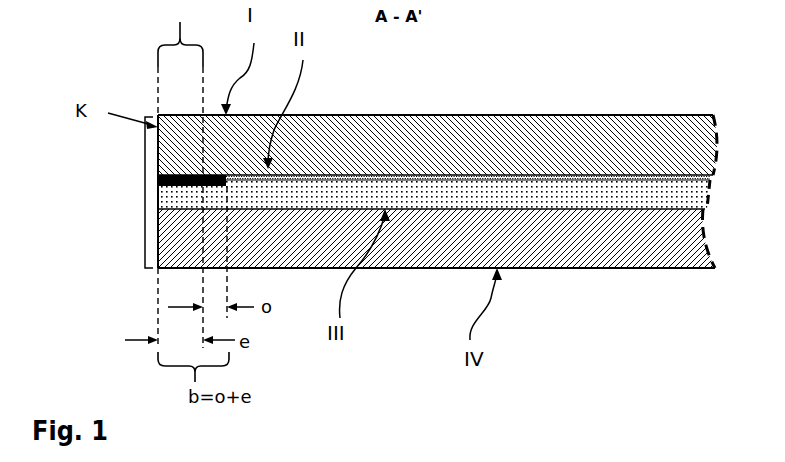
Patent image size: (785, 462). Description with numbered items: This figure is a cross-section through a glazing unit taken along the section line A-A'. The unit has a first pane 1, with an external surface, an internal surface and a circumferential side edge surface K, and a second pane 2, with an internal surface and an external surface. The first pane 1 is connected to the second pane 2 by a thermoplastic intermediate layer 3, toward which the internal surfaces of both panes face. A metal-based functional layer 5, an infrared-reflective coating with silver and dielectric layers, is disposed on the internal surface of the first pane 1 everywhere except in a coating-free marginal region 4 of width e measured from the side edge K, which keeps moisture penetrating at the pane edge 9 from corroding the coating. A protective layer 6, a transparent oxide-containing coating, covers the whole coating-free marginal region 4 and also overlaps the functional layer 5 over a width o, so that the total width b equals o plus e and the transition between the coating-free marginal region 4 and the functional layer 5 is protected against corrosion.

The first pane 1 is at (627, 137).
The second pane 2 is at (548, 243).
The thermoplastic intermediate layer 3 is at (653, 194).
The coating-free marginal region 4 is at (180, 174).
The metal-based functional layer 5 is at (500, 176).
The protective layer 6 is at (158, 177).
The pane edge 9 is at (145, 190).